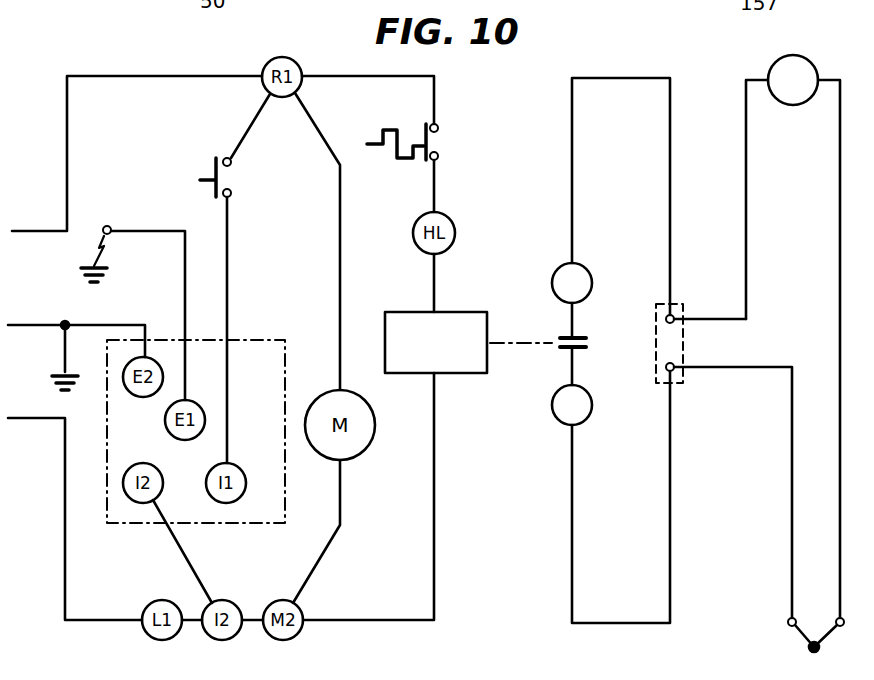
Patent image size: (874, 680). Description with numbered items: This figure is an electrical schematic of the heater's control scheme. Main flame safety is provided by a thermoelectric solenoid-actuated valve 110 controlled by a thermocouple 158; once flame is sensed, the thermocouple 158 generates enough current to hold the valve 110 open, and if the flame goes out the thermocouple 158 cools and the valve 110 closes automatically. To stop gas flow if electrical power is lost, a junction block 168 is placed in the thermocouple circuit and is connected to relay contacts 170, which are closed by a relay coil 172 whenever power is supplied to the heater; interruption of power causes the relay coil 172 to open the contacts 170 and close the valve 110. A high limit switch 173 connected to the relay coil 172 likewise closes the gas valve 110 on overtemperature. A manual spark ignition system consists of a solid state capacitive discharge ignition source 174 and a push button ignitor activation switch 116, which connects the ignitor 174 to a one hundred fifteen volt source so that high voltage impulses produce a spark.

The thermoelectric solenoid-actuated valve 110 is at (811, 66).
The push button ignitor activation switch 116 is at (212, 164).
The thermocouple 158 is at (798, 636).
The junction block 168 is at (690, 312).
The relay contacts 170 is at (591, 278).
The relay coil 172 is at (466, 312).
The high limit switch 173 is at (439, 148).
The solid state capacitive discharge ignition source 174 is at (265, 340).